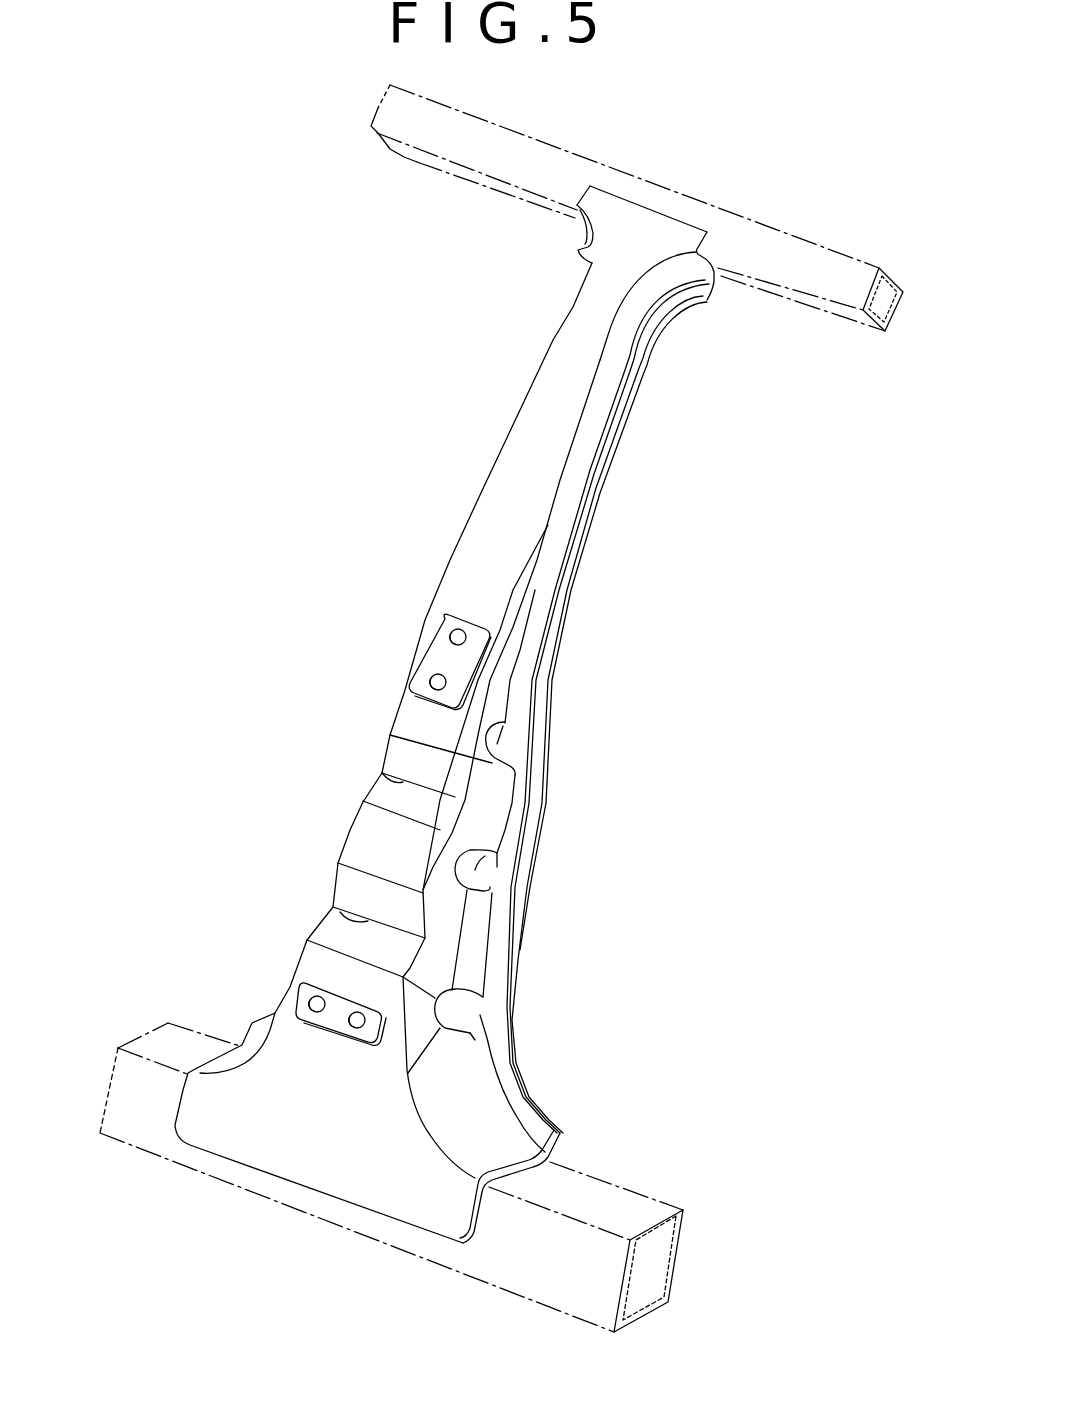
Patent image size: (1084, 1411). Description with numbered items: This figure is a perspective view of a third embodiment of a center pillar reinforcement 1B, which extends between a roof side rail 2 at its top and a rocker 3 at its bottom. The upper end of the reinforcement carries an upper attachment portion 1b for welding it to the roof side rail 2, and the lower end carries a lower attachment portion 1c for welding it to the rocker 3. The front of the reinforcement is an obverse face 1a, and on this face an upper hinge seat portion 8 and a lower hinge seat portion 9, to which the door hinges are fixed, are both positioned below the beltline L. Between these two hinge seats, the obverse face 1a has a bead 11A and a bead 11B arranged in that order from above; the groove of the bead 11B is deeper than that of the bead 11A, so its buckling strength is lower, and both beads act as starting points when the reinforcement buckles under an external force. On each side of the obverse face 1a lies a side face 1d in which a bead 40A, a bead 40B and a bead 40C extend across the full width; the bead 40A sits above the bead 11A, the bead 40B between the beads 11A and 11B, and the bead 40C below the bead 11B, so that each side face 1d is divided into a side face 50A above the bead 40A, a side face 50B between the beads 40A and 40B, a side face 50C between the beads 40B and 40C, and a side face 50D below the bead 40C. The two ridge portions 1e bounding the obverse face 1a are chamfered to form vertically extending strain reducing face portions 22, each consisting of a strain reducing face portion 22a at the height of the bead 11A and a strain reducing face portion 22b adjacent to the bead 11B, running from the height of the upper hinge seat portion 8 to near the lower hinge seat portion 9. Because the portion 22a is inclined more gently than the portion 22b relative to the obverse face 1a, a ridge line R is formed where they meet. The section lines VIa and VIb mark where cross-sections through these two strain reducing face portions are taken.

The obverse face 1a is at (527, 430).
The upper attachment portion 1b is at (717, 262).
The lower attachment portion 1c is at (523, 1176).
The side face 1d is at (580, 227).
The ridge portion 1e is at (473, 508).
The reinforcement 1B is at (613, 462).
The roof side rail 2 is at (833, 246).
The rocker 3 is at (677, 1257).
The upper hinge seat portion 8 is at (433, 653).
The lower hinge seat portion 9 is at (310, 999).
The bead 11A is at (403, 782).
The bead 11B is at (368, 921).
The strain reducing face portion 22 is at (718, 862).
The strain reducing face portion 22a is at (522, 833).
The strain reducing face portion 22b is at (450, 933).
The bead 40A is at (497, 744).
The bead 40B is at (475, 870).
The bead 40C is at (460, 1013).
The side face 50A is at (530, 668).
The side face 50B is at (503, 781).
The side face 50C is at (470, 970).
The side face 50D is at (480, 1112).
The ridge line R is at (437, 828).
The beltline L is at (413, 602).
The section line VIa is at (340, 762).
The section line VIb is at (307, 887).